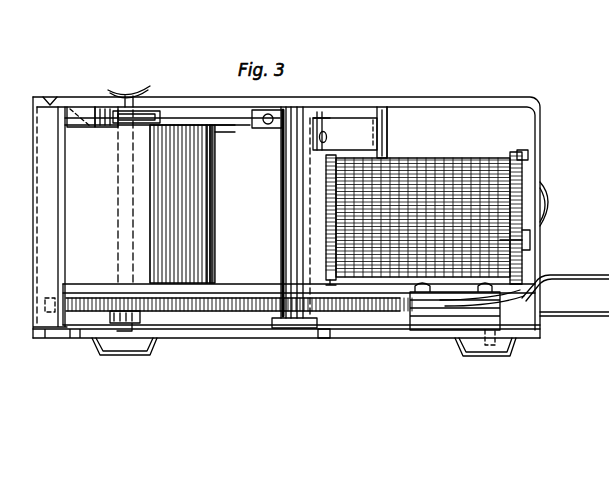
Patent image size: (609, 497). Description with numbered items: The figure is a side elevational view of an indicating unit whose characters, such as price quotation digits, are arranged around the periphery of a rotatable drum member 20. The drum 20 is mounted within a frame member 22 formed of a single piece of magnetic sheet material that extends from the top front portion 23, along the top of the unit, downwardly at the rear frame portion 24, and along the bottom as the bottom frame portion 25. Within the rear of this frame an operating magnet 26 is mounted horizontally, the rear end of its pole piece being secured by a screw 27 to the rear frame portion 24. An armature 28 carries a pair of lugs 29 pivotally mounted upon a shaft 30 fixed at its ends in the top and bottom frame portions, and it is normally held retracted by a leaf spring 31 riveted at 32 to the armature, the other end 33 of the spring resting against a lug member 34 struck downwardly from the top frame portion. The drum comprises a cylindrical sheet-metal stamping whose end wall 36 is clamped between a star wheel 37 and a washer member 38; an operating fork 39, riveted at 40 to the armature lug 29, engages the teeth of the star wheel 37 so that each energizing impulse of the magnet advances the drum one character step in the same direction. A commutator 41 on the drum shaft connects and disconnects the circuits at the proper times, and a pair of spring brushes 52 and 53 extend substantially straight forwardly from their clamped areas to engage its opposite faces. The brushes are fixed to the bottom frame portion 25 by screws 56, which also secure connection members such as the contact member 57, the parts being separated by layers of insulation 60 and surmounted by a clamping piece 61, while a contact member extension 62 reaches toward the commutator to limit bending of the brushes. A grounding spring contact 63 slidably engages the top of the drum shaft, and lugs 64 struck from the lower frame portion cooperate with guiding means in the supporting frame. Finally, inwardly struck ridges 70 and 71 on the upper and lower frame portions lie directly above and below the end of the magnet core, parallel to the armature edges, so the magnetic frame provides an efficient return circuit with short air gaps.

The rotatable drum member 20 is at (206, 207).
The frame member 22 is at (172, 106).
The top front portion 23 is at (43, 100).
The rear frame portion 24 is at (538, 142).
The bottom frame portion 25 is at (216, 332).
The operating magnet 26 is at (492, 186).
The screw 27 is at (540, 205).
The armature 28 is at (300, 228).
The lugs 29 is at (276, 118).
The shaft 30 is at (289, 178).
The leaf spring 31 is at (377, 125).
The rivet 32 is at (340, 130).
The spring end 33 is at (384, 140).
The lug member 34 is at (390, 140).
The end wall 36 is at (203, 124).
The star wheel 37 is at (99, 110).
The washer member 38 is at (80, 118).
The operating fork 39 is at (150, 112).
The rivet 40 is at (263, 125).
The commutator 41 is at (87, 300).
The spring brush 52 is at (238, 336).
The spring brush 53 is at (140, 325).
The screws 56 is at (428, 332).
The contact member 57 is at (540, 272).
The insulation layers 60 is at (440, 302).
The clamping piece 61 is at (522, 243).
The contact member extension 62 is at (402, 300).
The grounding spring contact 63 is at (135, 88).
The lugs 64 is at (130, 356).
The inwardly struck lug or ridge 70 is at (325, 112).
The inwardly struck lug or ridge 71 is at (324, 340).